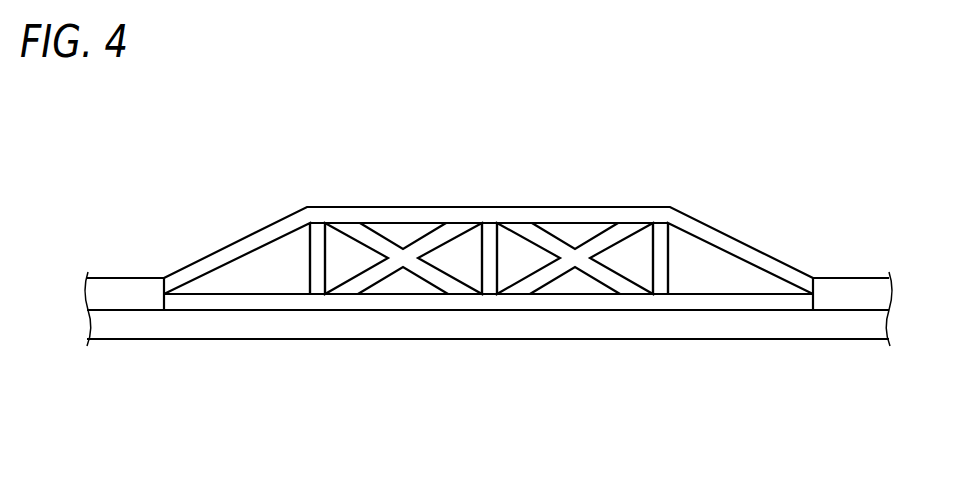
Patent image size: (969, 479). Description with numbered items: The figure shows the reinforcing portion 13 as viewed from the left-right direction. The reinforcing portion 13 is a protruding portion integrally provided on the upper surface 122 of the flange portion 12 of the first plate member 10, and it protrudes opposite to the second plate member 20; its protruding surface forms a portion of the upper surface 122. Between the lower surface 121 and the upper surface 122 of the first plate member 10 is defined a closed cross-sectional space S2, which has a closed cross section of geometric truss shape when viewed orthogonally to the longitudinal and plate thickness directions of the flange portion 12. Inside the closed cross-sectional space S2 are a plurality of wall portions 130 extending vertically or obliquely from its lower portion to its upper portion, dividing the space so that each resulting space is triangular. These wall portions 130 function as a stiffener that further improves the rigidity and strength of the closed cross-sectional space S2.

The first plate member 10 is at (877, 288).
The flange portion 12 is at (133, 288).
The reinforcing portion 13 is at (783, 151).
The second plate member 20 is at (873, 328).
The lower surface 121 is at (545, 312).
The upper surface 122 is at (527, 207).
The wall portions 130 is at (488, 285).
The closed cross-sectional space S2 is at (730, 250).